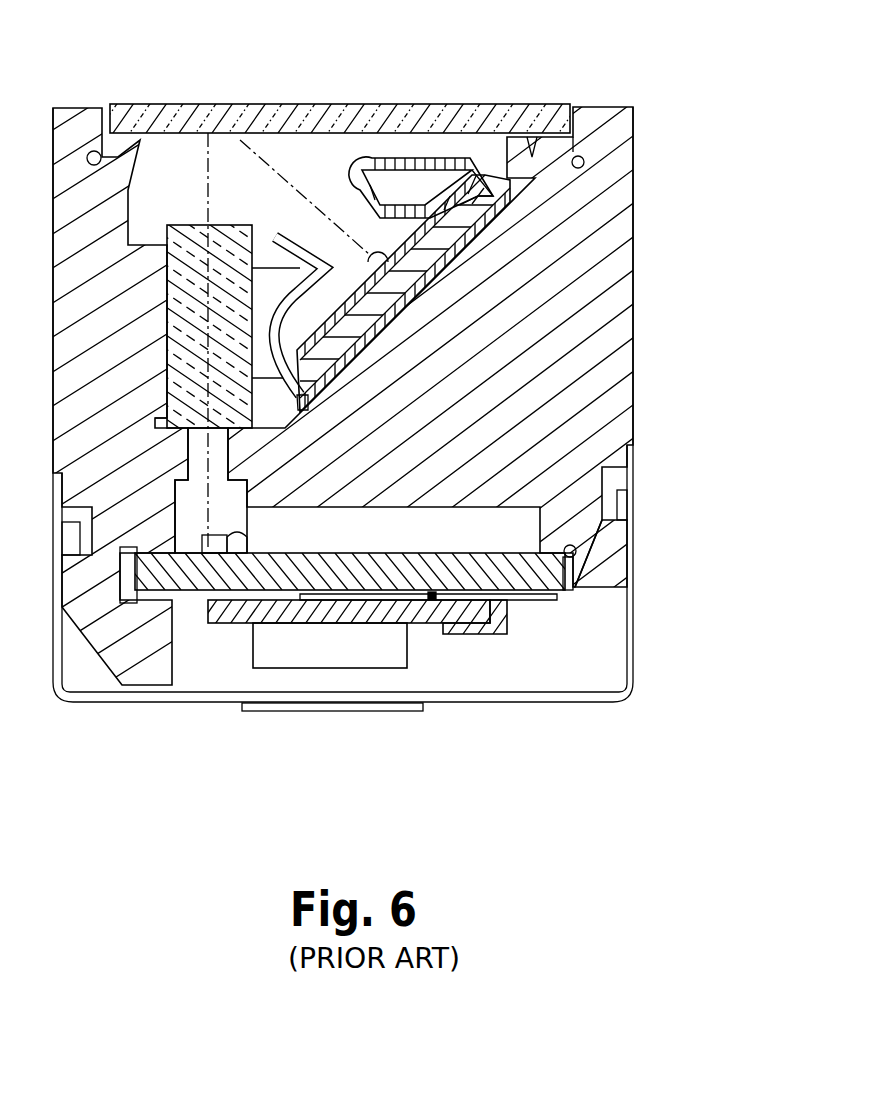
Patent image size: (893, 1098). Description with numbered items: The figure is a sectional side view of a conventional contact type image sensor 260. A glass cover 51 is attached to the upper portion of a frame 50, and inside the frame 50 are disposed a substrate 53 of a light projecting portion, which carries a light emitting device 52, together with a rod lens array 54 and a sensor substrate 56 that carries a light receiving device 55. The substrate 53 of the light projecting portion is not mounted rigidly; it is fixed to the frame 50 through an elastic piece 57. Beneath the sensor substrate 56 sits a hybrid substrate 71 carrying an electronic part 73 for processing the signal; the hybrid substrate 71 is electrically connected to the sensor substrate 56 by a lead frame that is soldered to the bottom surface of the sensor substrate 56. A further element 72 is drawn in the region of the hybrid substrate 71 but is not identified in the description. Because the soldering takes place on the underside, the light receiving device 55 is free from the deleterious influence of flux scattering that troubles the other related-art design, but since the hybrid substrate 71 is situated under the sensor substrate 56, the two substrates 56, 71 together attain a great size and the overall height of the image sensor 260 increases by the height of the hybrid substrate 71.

The image sensor 260 is at (658, 208).
The frame 50 is at (597, 227).
The glass cover 51 is at (248, 105).
The light emitting device 52 is at (367, 255).
The substrate of light projecting portion 53 is at (468, 197).
The rod lens array 54 is at (176, 225).
The light receiving device 55 is at (210, 547).
The sensor substrate 56 is at (275, 568).
The elastic piece 57 is at (437, 155).
The hybrid substrate 71 is at (452, 600).
The contact terminal 72 is at (500, 610).
The electronic part 73 is at (338, 650).